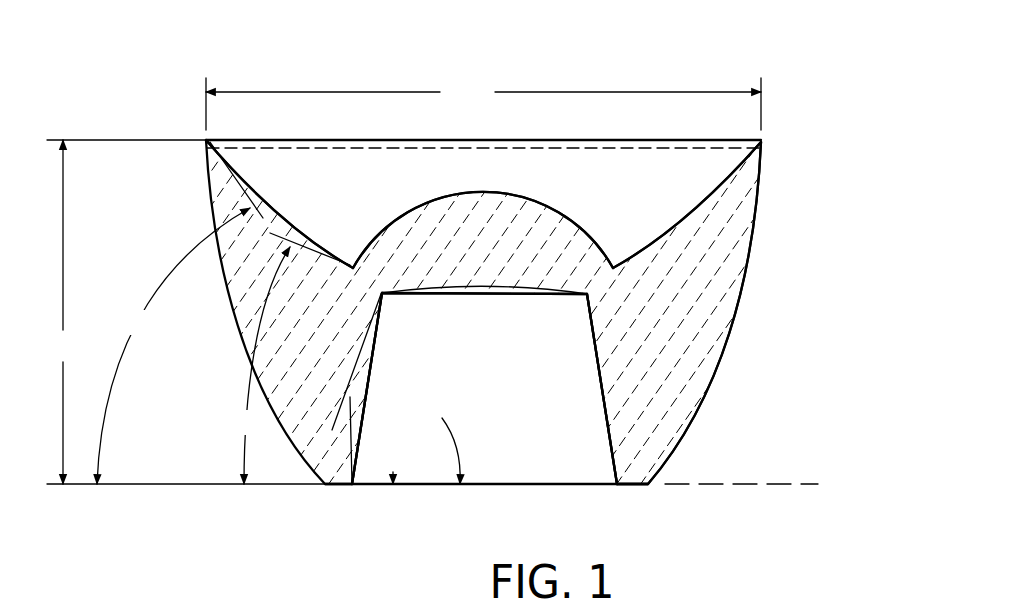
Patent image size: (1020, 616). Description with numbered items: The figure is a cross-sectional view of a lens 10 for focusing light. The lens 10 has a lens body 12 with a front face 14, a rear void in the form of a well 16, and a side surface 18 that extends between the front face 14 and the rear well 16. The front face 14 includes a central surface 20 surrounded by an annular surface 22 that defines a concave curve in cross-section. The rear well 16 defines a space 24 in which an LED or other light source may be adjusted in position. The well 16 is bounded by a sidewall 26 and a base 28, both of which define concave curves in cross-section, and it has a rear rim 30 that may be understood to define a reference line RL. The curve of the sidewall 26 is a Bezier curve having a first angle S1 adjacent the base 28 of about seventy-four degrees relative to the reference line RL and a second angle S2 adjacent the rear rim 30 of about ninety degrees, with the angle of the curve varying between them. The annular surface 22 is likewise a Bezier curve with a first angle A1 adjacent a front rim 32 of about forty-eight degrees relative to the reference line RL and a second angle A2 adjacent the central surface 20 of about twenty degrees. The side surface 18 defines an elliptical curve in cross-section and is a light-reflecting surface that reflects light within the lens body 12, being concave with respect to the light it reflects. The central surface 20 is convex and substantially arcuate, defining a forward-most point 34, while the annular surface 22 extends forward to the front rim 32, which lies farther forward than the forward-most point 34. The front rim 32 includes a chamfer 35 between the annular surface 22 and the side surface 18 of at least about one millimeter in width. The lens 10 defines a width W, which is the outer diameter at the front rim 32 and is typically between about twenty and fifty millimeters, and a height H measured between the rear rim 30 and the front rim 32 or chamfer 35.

The lens 10 is at (166, 114).
The lens body 12 is at (243, 283).
The front face 14 is at (385, 78).
The well 16 is at (428, 494).
The side surface 18 is at (730, 333).
The central surface 20 is at (541, 202).
The annular surface 22 is at (713, 203).
The space 24 is at (538, 460).
The sidewall 26 is at (362, 398).
The base 28 is at (458, 293).
The rear rim 30 is at (632, 488).
The front rim 32 is at (680, 138).
The forward-most point 34 is at (480, 192).
The chamfer 35 is at (357, 142).
The width W is at (483, 88).
The height H is at (64, 312).
The first angle A1 is at (173, 346).
The second angle A2 is at (258, 365).
The first angle S1 is at (366, 353).
The second angle S2 is at (353, 440).
The reference line RL is at (710, 483).